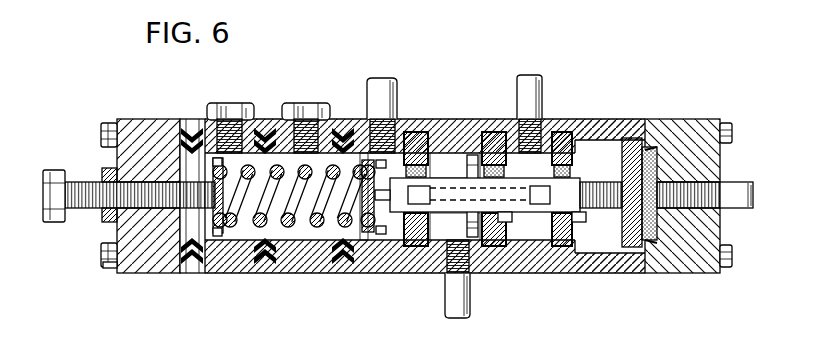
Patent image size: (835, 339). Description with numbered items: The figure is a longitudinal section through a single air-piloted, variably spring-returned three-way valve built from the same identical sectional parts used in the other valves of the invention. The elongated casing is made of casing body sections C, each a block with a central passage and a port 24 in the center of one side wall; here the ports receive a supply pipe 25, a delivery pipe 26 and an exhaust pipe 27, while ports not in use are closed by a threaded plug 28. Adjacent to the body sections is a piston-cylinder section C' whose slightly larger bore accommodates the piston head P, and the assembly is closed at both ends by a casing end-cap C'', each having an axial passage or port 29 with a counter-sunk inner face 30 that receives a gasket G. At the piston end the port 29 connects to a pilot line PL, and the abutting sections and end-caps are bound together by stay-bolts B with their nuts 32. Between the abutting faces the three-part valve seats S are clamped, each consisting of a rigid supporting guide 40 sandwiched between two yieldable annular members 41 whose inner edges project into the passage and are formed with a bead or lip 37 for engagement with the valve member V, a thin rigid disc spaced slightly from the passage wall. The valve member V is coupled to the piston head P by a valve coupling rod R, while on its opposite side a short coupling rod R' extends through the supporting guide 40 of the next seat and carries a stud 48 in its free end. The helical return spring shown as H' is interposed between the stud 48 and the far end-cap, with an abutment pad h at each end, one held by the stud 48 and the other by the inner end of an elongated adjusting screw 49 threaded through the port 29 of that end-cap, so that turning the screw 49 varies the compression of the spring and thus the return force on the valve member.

The casing body section C is at (414, 166).
The casing end-cap C'' is at (418, 176).
The piston-cylinder section C' is at (610, 180).
The gasket G is at (190, 262).
The port 24 is at (253, 128).
The threaded plug 28 is at (233, 107).
The exhaust pipe 27 is at (381, 93).
The supply pipe 25 is at (546, 86).
The delivery pipe 26 is at (460, 297).
The annular member 41 is at (553, 156).
The supporting guide 40 is at (413, 260).
The valve seat S is at (440, 157).
The valve member V is at (470, 221).
The valve coupling rod R is at (477, 195).
The short coupling rod R' is at (419, 195).
The bead or lip 37 is at (510, 228).
The spring assembly H' is at (294, 203).
The stud 48 is at (370, 217).
The spring-pad h is at (220, 236).
The adjusting screw 49 is at (73, 184).
The stay-bolt B is at (101, 133).
The nut 32 is at (113, 270).
The piston head P is at (630, 158).
The counter-sunk portion 30 is at (653, 227).
The passage or port 29 is at (690, 187).
The pilot line PL is at (737, 194).